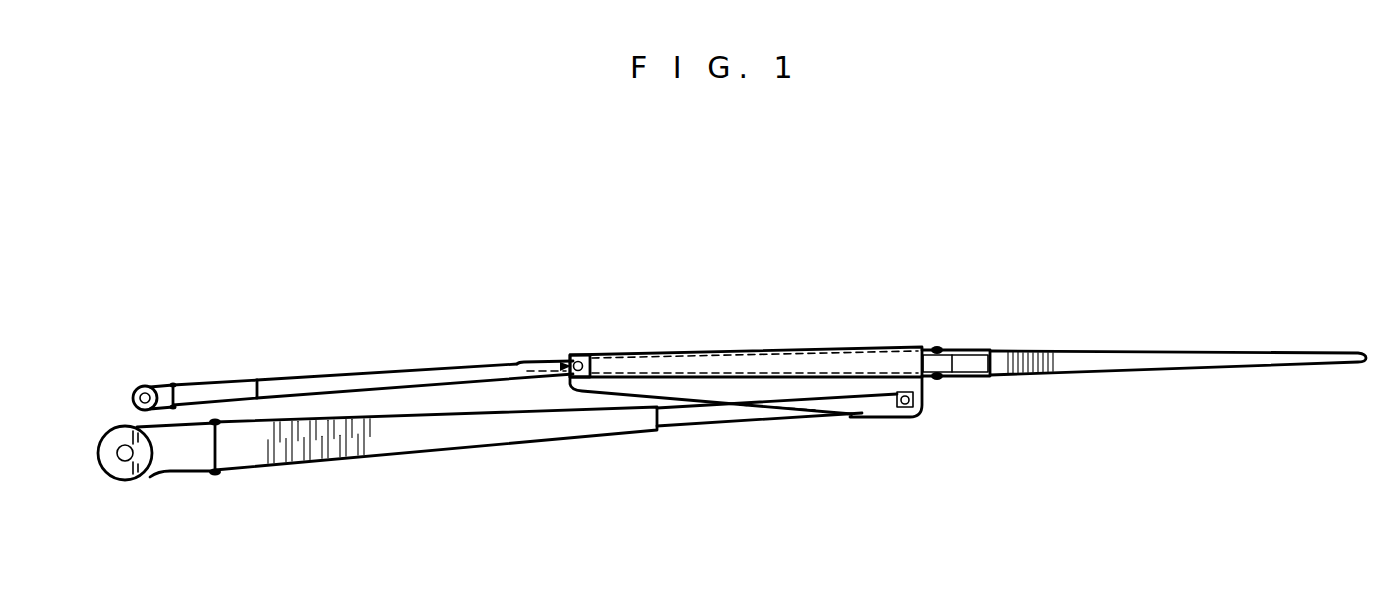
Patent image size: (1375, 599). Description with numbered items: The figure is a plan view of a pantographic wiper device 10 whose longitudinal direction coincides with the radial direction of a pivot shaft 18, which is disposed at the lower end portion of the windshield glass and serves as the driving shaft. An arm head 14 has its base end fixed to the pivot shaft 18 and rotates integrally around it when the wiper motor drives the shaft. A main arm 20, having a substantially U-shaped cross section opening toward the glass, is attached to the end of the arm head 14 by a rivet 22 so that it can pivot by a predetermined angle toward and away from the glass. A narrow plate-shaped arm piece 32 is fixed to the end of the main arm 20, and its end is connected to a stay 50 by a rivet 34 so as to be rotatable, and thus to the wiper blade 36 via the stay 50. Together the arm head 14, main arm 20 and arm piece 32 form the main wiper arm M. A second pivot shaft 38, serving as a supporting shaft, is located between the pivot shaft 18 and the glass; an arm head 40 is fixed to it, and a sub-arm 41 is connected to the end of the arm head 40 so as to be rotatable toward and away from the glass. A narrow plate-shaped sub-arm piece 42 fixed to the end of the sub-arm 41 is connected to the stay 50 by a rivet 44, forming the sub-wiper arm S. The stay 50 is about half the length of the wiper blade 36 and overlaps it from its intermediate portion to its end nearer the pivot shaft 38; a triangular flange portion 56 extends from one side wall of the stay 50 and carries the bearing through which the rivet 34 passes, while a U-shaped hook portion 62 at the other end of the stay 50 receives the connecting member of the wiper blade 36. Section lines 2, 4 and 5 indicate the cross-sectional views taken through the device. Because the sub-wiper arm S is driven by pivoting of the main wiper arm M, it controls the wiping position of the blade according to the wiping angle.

The wiper device 10 is at (1030, 204).
The arm head 14 is at (168, 457).
The pivot shaft 18 is at (110, 466).
The main arm 20 is at (378, 443).
The rivet 22 is at (213, 474).
The arm piece 32 is at (697, 413).
The rivet 34 is at (906, 409).
The wiper blade 36 is at (1086, 350).
The pivot shaft 38 is at (150, 389).
The arm head 40 is at (162, 385).
The sub-arm 41 is at (238, 385).
The sub-arm piece 42 is at (370, 376).
The rivet 44 is at (571, 362).
The stay 50 is at (830, 355).
The flange portion 56 is at (738, 393).
The hook portion 62 is at (945, 360).
The sub-wiper arm S is at (457, 363).
The main wiper arm M is at (482, 452).
The section line 2 is at (77, 459).
The section line 4 is at (904, 274).
The section line 5 is at (577, 408).